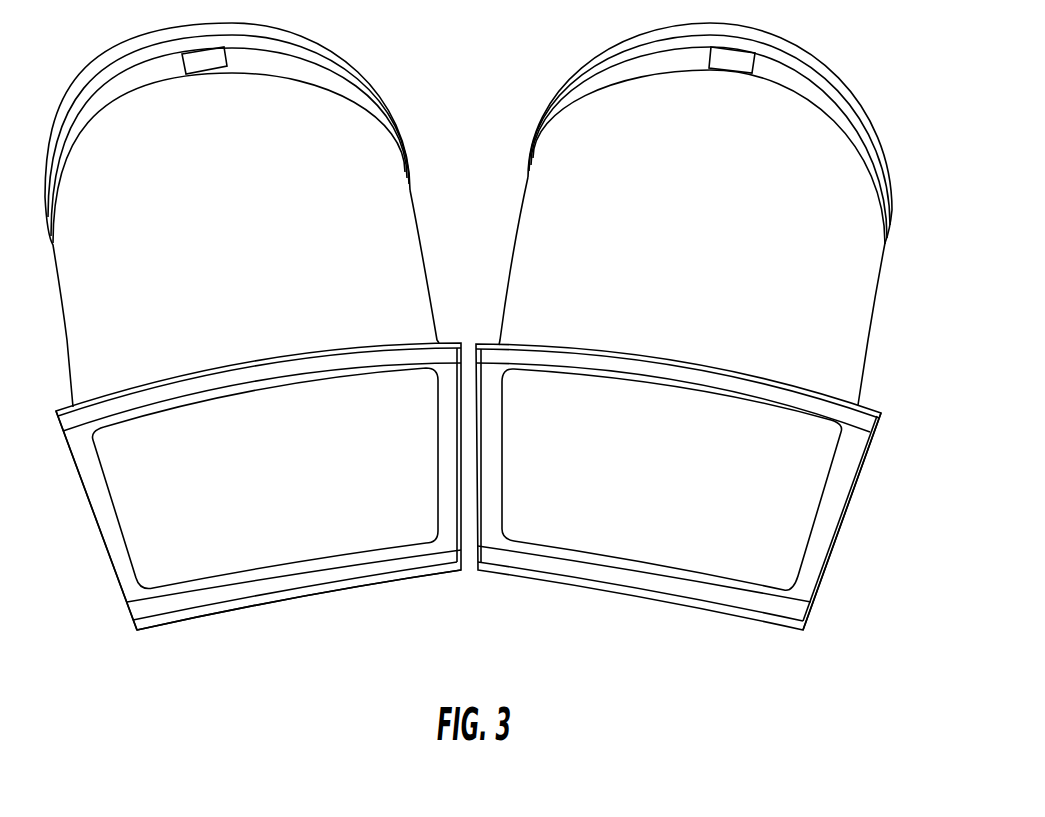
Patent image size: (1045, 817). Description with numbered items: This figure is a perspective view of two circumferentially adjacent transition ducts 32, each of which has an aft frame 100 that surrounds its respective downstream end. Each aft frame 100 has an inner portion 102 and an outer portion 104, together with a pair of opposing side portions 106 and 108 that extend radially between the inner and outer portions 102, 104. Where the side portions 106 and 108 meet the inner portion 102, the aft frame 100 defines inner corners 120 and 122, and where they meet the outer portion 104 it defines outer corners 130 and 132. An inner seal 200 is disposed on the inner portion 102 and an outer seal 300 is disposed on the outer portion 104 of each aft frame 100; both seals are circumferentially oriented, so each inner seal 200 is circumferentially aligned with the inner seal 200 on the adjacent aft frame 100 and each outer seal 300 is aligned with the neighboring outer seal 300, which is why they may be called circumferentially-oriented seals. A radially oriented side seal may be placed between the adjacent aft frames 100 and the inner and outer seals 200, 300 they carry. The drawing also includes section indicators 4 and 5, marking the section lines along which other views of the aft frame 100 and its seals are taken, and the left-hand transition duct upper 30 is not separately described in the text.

The left footwear upper 30 is at (242, 215).
The transition duct 32 is at (897, 108).
The aft frame 100 is at (813, 575).
The inner portion 102 is at (290, 557).
The outer portion 104 is at (720, 397).
The side portion 106 is at (438, 395).
The side portion 108 is at (120, 523).
The inner corner 120 is at (122, 598).
The inner corner 122 is at (813, 604).
The outer corner 130 is at (77, 470).
The outer corner 132 is at (868, 453).
The inner seal 200 is at (444, 571).
The outer seal 300 is at (342, 362).
The section line 4- 4 is at (493, 592).
The section line 5- 5 is at (493, 392).